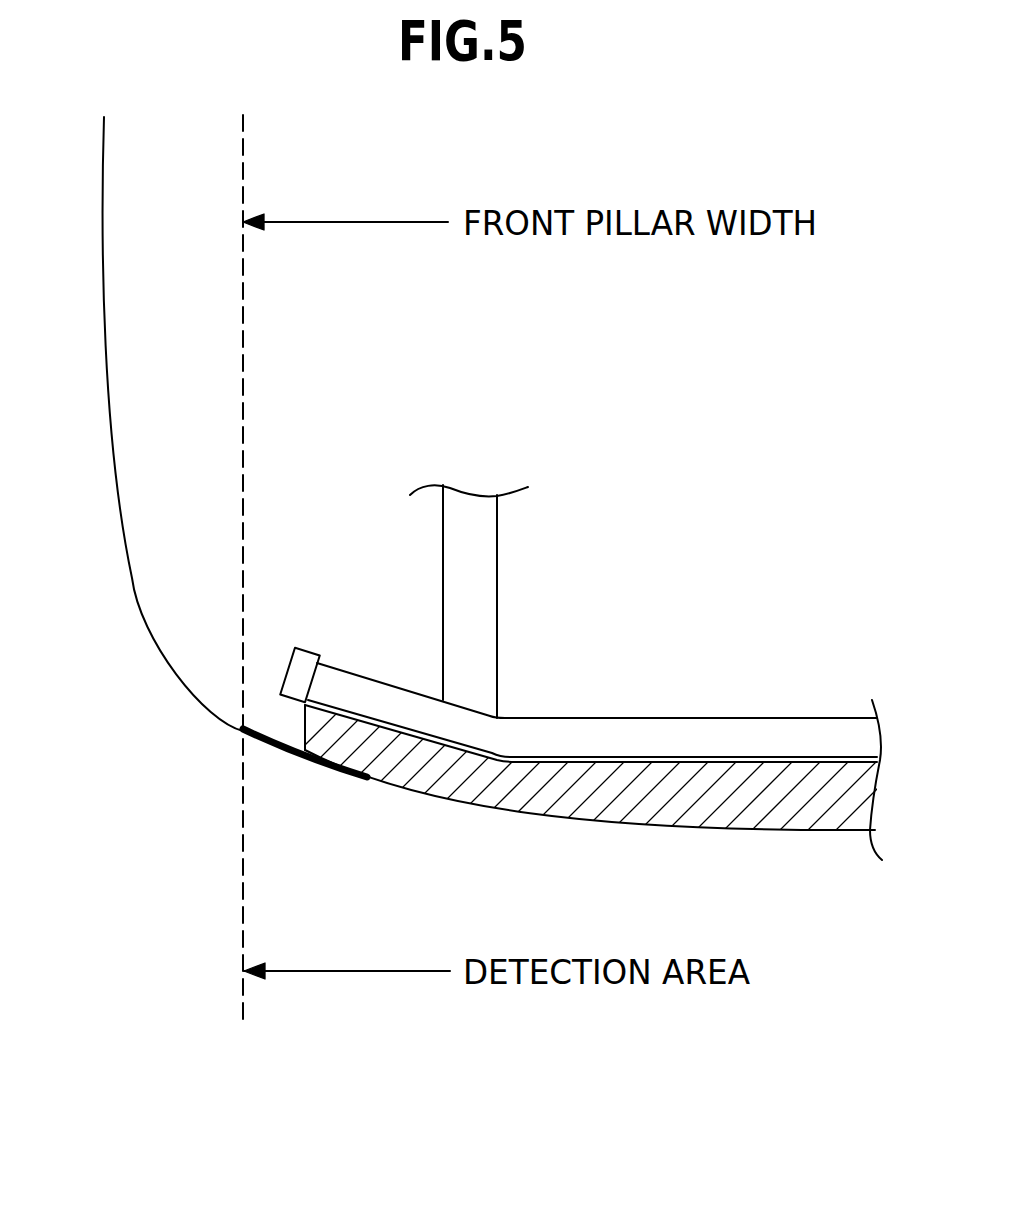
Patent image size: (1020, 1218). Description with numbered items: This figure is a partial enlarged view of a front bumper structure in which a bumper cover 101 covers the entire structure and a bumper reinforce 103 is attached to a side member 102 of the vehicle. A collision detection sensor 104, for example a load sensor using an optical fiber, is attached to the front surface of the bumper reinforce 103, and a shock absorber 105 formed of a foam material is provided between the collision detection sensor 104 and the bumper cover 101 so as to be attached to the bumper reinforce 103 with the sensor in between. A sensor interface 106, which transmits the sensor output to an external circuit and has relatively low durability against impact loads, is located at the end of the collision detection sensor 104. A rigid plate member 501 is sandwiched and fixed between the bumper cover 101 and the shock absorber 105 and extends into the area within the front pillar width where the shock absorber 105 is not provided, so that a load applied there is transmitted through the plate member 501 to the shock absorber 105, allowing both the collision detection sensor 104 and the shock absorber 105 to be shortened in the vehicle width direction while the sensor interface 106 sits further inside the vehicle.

The bumper cover 101 is at (528, 817).
The side member 102 is at (485, 558).
The bumper reinforce 103 is at (655, 730).
The collision detection sensor 104 is at (375, 722).
The shock absorber 105 is at (732, 812).
The sensor interface 106 is at (297, 677).
The plate member 501 is at (257, 745).